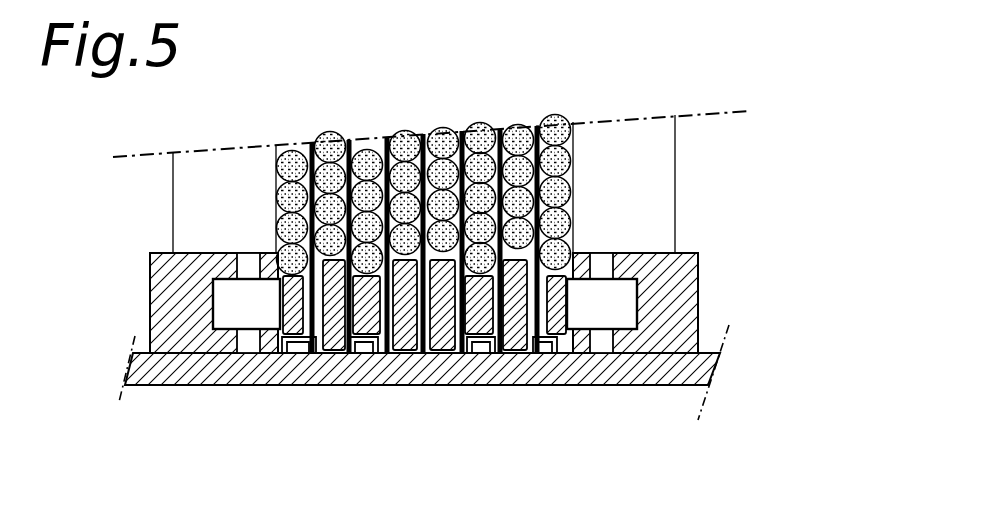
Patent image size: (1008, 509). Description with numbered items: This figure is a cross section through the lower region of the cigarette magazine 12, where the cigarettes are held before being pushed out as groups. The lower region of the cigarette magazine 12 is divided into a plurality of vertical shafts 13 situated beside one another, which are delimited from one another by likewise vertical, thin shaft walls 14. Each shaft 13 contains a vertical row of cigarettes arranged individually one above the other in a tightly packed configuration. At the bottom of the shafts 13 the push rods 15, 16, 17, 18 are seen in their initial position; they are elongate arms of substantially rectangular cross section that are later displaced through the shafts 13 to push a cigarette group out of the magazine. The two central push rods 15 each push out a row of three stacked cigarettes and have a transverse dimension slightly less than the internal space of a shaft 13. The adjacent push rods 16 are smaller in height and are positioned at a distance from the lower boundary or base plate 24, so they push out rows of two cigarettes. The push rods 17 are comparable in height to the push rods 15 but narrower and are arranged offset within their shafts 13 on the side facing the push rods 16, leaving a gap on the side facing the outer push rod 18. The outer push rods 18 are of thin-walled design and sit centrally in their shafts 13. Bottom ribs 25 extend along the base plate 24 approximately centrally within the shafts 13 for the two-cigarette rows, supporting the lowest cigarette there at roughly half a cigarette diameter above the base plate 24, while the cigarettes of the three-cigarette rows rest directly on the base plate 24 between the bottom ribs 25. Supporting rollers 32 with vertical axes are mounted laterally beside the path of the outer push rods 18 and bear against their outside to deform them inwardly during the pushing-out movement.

The cigarette magazine 12 is at (441, 88).
The vertical shafts 13 is at (552, 89).
The shaft walls 14 is at (384, 141).
The central push rods 15 is at (440, 335).
The push rods 16 is at (360, 330).
The push rods 17 is at (333, 343).
The outer push rods 18 is at (289, 340).
The base plate 24 is at (680, 385).
The bottom ribs 25 is at (296, 343).
The supporting rollers 32 is at (227, 303).